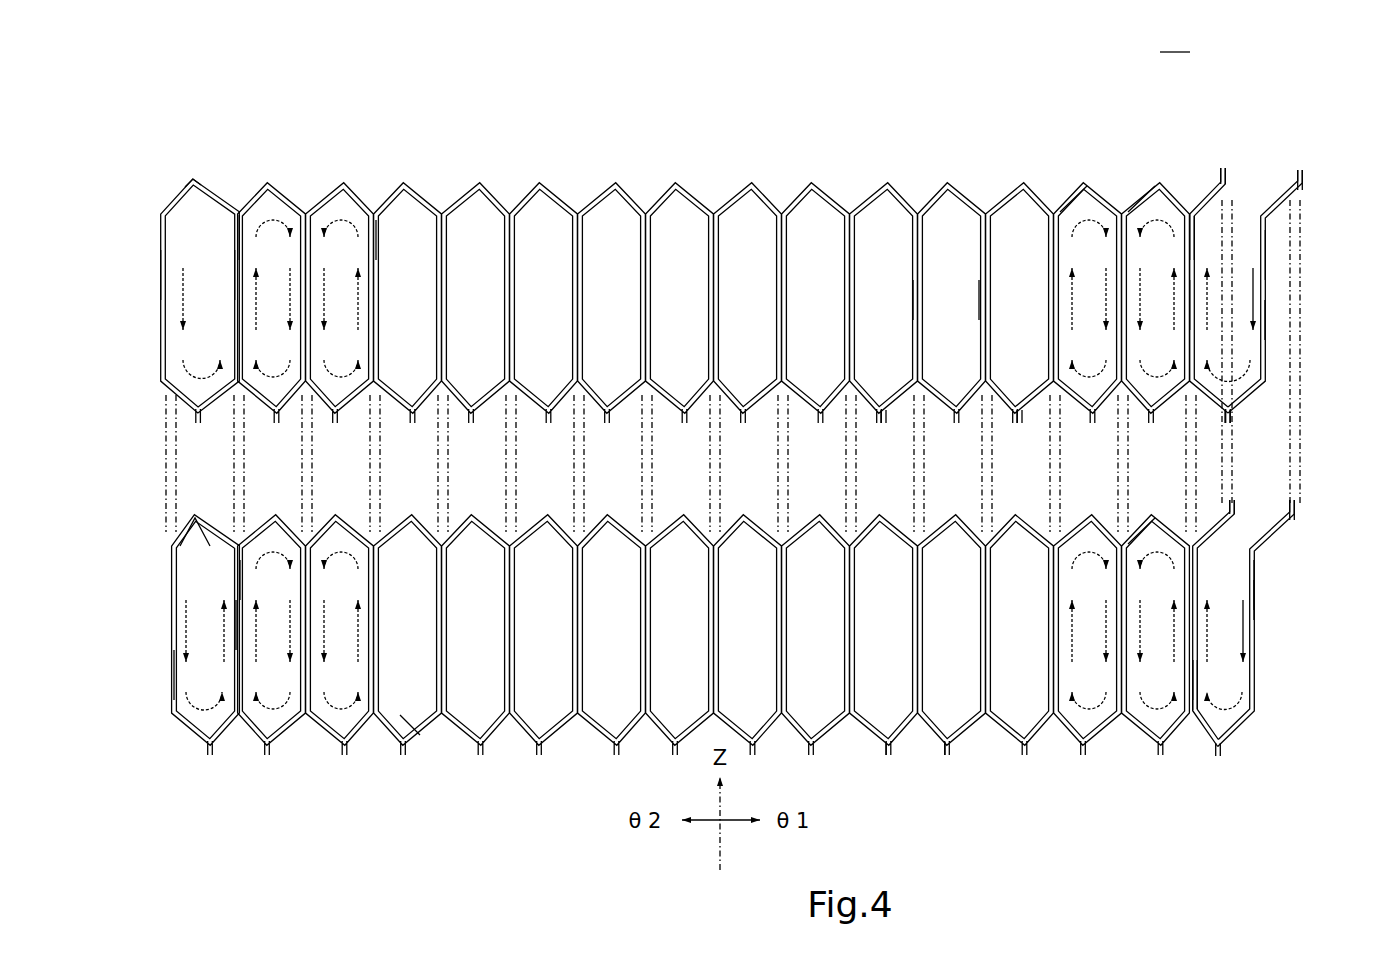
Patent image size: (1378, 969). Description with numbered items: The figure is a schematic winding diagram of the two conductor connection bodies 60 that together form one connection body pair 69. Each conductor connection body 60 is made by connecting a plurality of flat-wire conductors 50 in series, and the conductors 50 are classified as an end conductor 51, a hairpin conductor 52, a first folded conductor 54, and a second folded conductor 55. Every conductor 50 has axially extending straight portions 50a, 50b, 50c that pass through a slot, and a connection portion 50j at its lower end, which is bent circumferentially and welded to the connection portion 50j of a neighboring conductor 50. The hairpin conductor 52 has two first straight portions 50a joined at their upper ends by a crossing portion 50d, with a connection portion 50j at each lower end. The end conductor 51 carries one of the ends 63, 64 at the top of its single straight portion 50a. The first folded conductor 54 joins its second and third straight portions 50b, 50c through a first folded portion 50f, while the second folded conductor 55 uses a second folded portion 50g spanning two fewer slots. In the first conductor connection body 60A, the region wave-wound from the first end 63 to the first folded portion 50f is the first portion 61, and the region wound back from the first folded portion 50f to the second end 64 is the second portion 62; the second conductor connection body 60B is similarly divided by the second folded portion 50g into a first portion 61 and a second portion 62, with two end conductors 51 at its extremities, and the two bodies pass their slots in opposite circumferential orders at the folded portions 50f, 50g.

The conductor 50 is at (737, 444).
The first straight portion 50a is at (462, 215).
The second straight portion 50b is at (235, 268).
The third straight portion 50c is at (165, 262).
The crossing portion 50d is at (1072, 190).
The first folded portion 50f is at (193, 178).
The second folded portion 50g is at (195, 515).
The connection portion 50j is at (888, 400).
The end conductor 51 is at (1212, 182).
The hairpin conductor 52 is at (268, 180).
The first folded conductor 54 is at (178, 178).
The second folded conductor 55 is at (174, 537).
The conductor connection body 60 is at (1268, 438).
The first conductor connection body 60A is at (1192, 195).
The second conductor connection body 60B is at (1220, 762).
The first portion 61 is at (1268, 238).
The second portion 62 is at (1195, 290).
The first end 63 is at (1302, 188).
The second end 64 is at (1226, 186).
The connection body pair 69 is at (1175, 39).